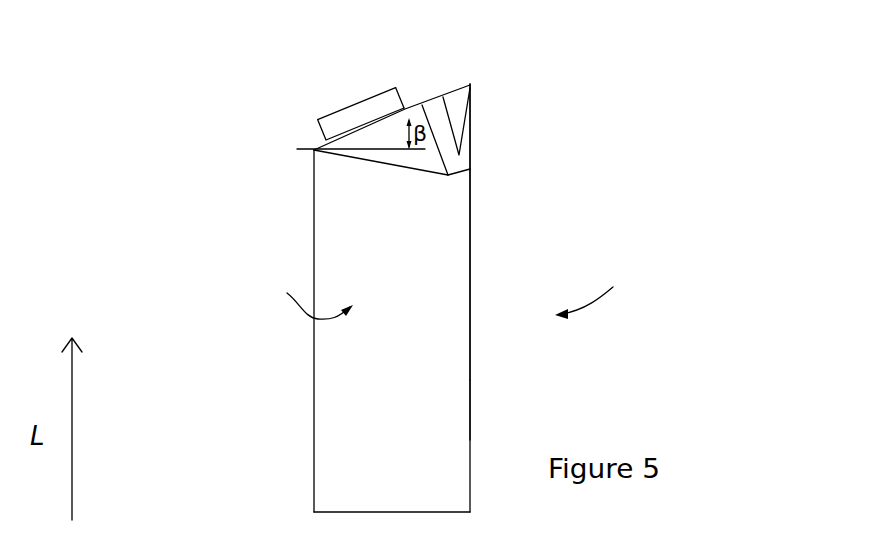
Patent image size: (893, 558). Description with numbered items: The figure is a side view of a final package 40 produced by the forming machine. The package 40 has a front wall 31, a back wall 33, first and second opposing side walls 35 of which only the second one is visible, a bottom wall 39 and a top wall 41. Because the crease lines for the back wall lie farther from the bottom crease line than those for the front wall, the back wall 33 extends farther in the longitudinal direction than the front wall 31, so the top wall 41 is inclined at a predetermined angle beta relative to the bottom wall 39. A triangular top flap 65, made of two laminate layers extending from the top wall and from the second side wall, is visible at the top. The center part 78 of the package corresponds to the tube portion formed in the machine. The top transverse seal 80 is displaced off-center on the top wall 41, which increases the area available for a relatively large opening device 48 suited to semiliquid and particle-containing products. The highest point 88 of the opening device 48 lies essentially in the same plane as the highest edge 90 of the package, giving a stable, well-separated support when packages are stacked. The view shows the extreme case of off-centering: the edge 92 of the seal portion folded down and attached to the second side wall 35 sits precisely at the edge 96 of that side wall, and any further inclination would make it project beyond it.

The front wall 31 is at (314, 430).
The back wall 33 is at (471, 376).
The second side wall 35 is at (437, 398).
The bottom wall 39 is at (422, 512).
The package 40 is at (599, 294).
The top wall 41 is at (417, 104).
The opening device 48 is at (332, 122).
The top flap 65 is at (373, 155).
The center part 78 is at (306, 298).
The top transverse seal 80 is at (449, 142).
The point 88 is at (399, 88).
The edge 90 is at (470, 84).
The edge 92 is at (470, 168).
The edge 96 is at (471, 272).